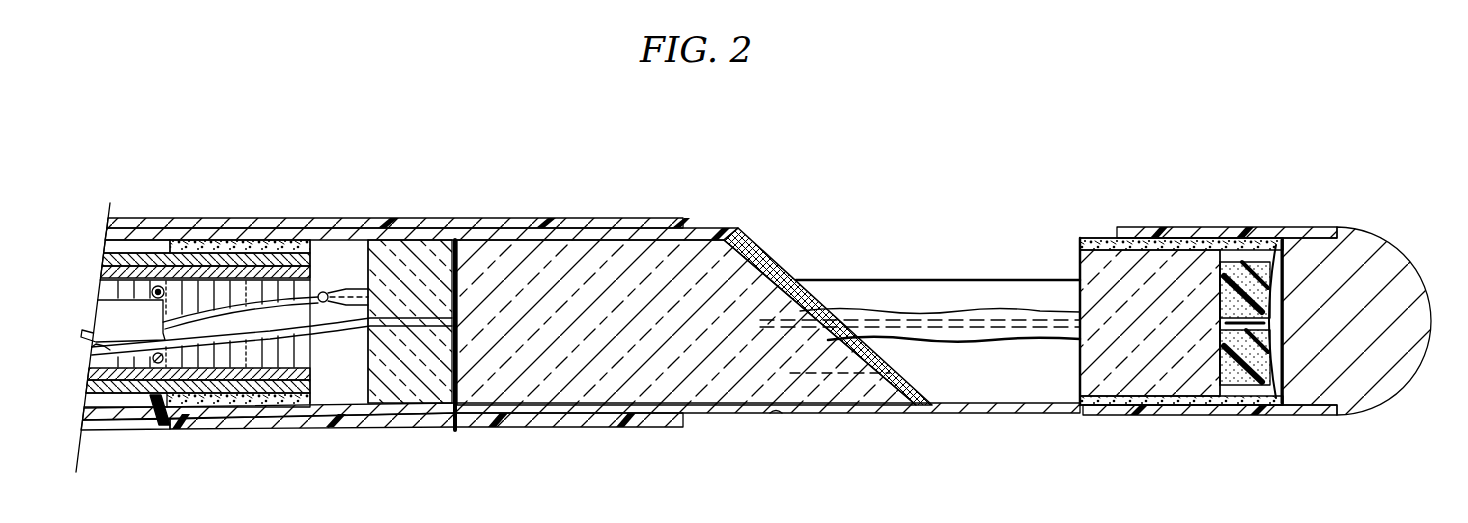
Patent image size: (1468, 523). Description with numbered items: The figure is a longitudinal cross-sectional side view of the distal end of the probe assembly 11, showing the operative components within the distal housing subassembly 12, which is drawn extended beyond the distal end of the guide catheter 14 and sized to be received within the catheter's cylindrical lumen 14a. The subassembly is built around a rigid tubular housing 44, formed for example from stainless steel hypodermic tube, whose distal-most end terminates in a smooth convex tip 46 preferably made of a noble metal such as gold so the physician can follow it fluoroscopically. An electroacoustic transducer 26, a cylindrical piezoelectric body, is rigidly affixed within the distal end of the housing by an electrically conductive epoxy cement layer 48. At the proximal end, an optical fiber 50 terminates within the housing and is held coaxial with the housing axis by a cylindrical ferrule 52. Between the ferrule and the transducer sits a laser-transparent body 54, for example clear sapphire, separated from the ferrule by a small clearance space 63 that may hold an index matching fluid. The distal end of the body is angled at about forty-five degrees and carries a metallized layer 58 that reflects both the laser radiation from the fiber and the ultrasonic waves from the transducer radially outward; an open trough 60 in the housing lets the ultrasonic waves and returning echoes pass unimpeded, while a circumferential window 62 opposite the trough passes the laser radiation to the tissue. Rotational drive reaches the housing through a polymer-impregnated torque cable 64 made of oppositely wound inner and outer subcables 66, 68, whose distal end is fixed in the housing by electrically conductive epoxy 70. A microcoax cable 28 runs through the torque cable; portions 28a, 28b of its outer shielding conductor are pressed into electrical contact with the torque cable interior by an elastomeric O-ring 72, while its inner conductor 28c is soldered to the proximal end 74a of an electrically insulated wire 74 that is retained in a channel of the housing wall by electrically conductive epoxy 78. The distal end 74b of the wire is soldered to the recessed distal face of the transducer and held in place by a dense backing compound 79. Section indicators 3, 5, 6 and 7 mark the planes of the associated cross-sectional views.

The probe assembly 11 is at (548, 186).
The distal housing subassembly 12 is at (1076, 432).
The guide catheter 14 is at (612, 218).
The lumen 14a is at (93, 420).
The electroacoustic transducer 26 is at (1165, 334).
The microcoax cable 28 is at (187, 324).
The outer conductor portion 28a is at (135, 265).
The outer conductor portion 28b is at (192, 402).
The inner conductor 28c is at (320, 290).
The tubular housing 44 is at (1210, 408).
The convex tip 46 is at (1375, 329).
The electrically conductive epoxy cement layer 48 is at (1190, 227).
The optical fiber 50 is at (325, 334).
The cylindrical ferrule 52 is at (420, 304).
The body 54 is at (640, 344).
The metallized layer 58 is at (775, 257).
The open trough 60 is at (975, 281).
The circumferential window 62 is at (776, 412).
The clearance space 63 is at (455, 430).
The torque cable 64 is at (158, 417).
The inner subcable 66 is at (100, 292).
The outer subcable 68 is at (118, 252).
The electrically conductive epoxy 70 is at (218, 245).
The elastomeric O-ring 72 is at (178, 250).
The electrically insulated wire 74 is at (882, 320).
The proximal end of wire 74a is at (328, 296).
The distal end of wire 74b is at (1282, 278).
The electrically conductive epoxy 78 is at (977, 340).
The backing compound 79 is at (1272, 358).
The section line 3 is at (97, 318).
The section line 5 is at (408, 198).
The section line 6 is at (1002, 200).
The section line 7 is at (855, 172).